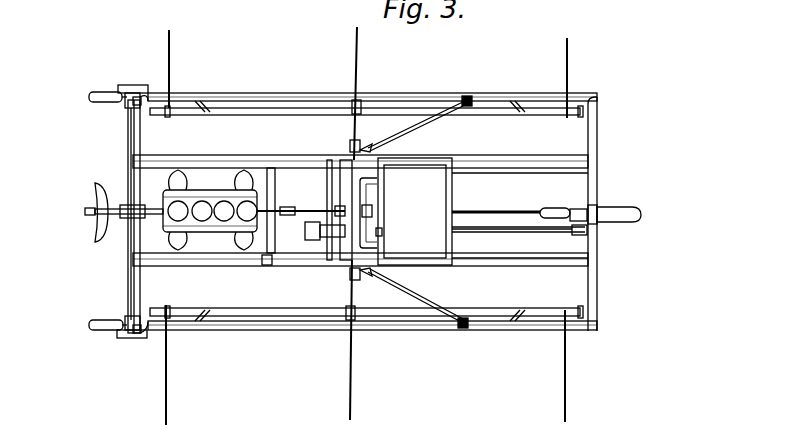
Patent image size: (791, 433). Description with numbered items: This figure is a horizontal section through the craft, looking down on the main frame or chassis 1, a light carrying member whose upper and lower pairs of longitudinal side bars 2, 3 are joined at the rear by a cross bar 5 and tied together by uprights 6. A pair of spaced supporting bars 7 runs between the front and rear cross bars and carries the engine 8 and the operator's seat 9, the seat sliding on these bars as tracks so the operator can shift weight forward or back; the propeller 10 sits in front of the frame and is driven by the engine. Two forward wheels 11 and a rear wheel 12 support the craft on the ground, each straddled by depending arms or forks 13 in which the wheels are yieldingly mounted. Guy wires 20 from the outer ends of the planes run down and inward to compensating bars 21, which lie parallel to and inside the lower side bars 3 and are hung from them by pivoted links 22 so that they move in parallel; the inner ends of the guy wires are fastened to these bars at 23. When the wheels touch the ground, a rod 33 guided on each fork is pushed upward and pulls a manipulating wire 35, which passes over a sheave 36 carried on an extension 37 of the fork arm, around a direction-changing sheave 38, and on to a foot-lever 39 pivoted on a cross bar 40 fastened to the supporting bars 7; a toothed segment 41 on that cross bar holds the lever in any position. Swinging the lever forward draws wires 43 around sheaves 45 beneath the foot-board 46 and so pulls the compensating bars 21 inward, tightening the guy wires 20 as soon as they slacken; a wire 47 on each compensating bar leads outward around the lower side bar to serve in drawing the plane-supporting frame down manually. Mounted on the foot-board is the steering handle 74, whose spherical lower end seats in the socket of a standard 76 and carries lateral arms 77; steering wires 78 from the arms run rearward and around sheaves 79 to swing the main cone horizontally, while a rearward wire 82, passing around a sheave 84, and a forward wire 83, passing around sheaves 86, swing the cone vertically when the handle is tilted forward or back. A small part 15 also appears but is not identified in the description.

The main frame or chassis 1 is at (503, 112).
The upper longitudinal side bars 2 is at (362, 216).
The lower longitudinal side bars 3 is at (263, 96).
The rear cross bar 5 is at (128, 286).
The uprights 6 is at (152, 97).
The supporting bars 7 is at (503, 173).
The engine 8 is at (208, 205).
The operator's seat 9 is at (415, 211).
The propeller 10 is at (92, 212).
The forward wheels 11 is at (89, 97).
The rear wheel 12 is at (641, 216).
The arms or forks 13 is at (128, 103).
The coupling 15 is at (336, 208).
The guy wires 20 is at (168, 43).
The compensating bars 21 is at (142, 92).
The links 22 is at (205, 102).
The guy-wire attachment points 23 is at (170, 115).
The rod 33 is at (128, 85).
The manipulating cord or wire 35 is at (128, 142).
The sheaves 36 is at (120, 100).
The extensions 37 is at (122, 92).
The direction-changing sheaves 38 is at (128, 218).
The foot-lever 39 is at (306, 224).
The cross bar 40 is at (328, 182).
The toothed segment 41 is at (325, 237).
The wires 43 is at (350, 136).
The direction-changing sheaves 45 is at (383, 232).
The foot-board 46 is at (340, 168).
The wire 47 is at (362, 106).
The steering handle 74 is at (370, 192).
The standard 76 is at (373, 212).
The arms 77 is at (376, 146).
The steering-wires 78 is at (432, 118).
The direction-changing sheaves 79 is at (466, 96).
The wire 82 is at (466, 212).
The wire 83 is at (273, 262).
The direction-changing sheave 84 is at (576, 209).
The direction-changing sheaves 86 is at (290, 203).